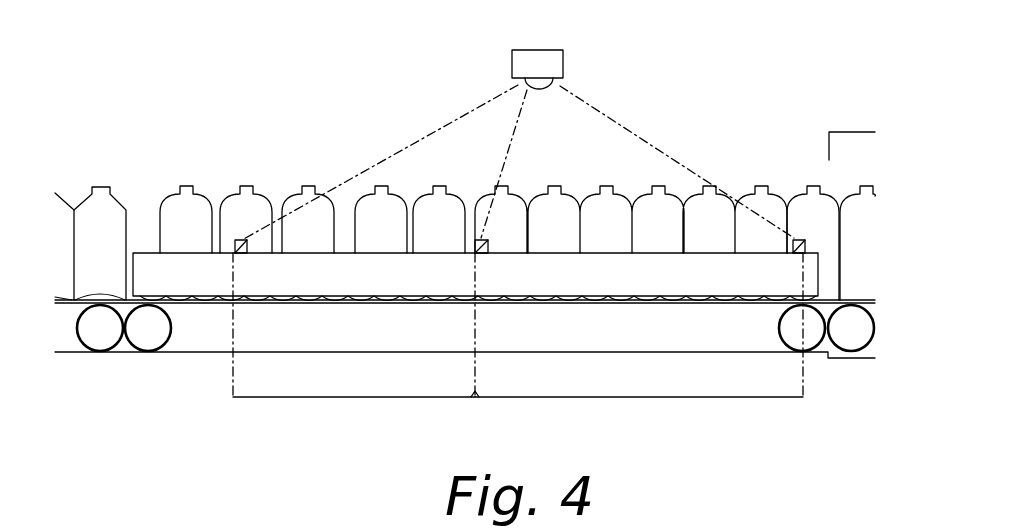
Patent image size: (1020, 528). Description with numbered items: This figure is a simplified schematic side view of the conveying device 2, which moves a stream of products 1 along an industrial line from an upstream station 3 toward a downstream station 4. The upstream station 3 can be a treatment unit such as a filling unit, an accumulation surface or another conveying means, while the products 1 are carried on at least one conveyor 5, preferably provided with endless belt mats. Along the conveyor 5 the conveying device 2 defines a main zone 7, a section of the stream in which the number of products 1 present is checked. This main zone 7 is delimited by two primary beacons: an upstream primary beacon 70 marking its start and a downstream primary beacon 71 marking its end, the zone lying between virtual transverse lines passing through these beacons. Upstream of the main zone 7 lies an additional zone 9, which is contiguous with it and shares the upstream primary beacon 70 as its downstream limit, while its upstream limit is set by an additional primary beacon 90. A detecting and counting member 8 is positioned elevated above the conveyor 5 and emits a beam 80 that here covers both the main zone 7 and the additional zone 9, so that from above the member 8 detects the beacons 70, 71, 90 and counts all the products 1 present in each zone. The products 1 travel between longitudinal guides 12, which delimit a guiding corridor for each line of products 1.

The products 1 is at (115, 198).
The conveying device 2 is at (550, 383).
The upstream station 3 is at (74, 352).
The downstream station 4 is at (855, 132).
The conveyor 5 is at (193, 326).
The main zone 7 is at (644, 403).
The detecting and counting member 8 is at (563, 63).
The additional zone 9 is at (359, 403).
The longitudinal guide 12 is at (302, 280).
The upstream primary beacon 70 is at (480, 240).
The downstream primary beacon 71 is at (797, 236).
The beam 80 is at (644, 131).
The additional primary beacon 90 is at (240, 238).